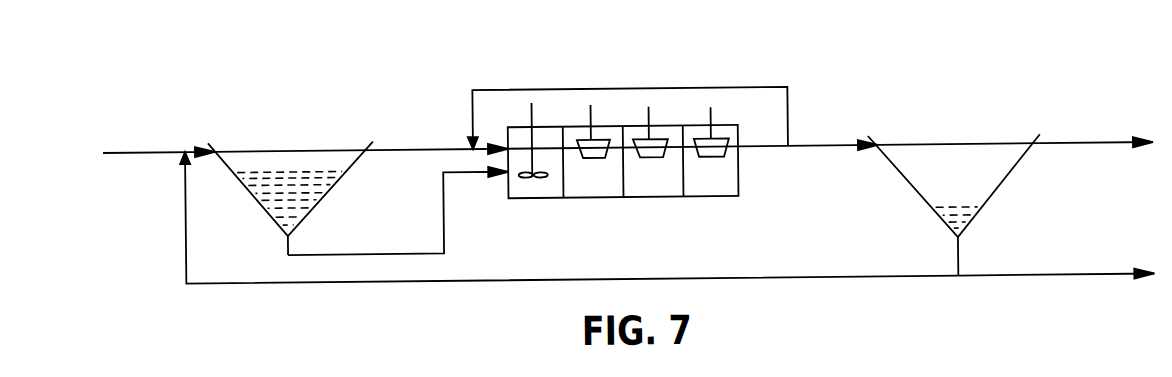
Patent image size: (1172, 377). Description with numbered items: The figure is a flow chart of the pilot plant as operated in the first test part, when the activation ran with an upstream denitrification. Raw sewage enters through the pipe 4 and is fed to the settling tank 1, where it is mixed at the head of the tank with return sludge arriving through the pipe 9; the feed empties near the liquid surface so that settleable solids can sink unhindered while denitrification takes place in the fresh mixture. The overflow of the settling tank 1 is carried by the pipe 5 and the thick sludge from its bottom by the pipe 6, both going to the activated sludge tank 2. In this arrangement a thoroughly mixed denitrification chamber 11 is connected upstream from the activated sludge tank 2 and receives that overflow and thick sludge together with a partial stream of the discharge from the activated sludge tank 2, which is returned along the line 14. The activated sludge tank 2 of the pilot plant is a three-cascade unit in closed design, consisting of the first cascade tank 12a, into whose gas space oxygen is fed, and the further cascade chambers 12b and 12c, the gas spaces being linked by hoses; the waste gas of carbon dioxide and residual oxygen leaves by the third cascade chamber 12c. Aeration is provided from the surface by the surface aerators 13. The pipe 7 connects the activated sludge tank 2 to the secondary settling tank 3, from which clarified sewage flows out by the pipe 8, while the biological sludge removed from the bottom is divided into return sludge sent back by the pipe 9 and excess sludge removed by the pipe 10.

The settling tank 1 is at (293, 189).
The activated sludge tank 2 is at (642, 144).
The secondary settling tank 3 is at (960, 171).
The pipe 4 is at (159, 144).
The pipe 5 is at (441, 139).
The pipe 6 is at (398, 211).
The pipe 7 is at (808, 133).
The pipe 8 is at (1096, 130).
The pipe 9 is at (569, 214).
The pipe 10 is at (1056, 263).
The denitrification chamber 11 is at (553, 193).
The first cascade tank 12a is at (607, 193).
The cascade chamber 12b is at (670, 189).
The third cascade chamber 12c is at (735, 145).
The surface aerators 13 is at (712, 144).
The bypass line 14 is at (553, 94).